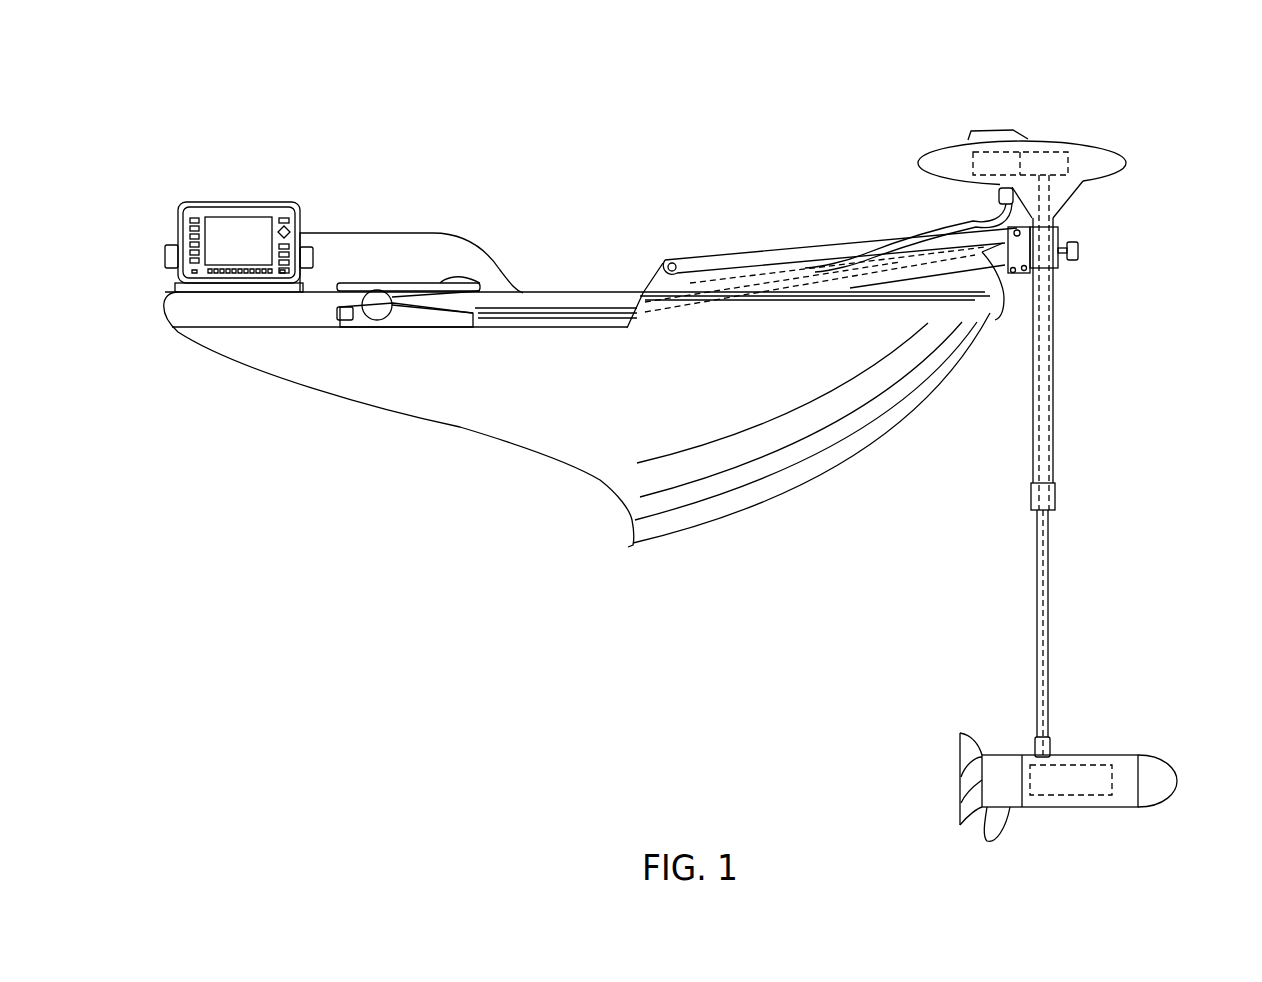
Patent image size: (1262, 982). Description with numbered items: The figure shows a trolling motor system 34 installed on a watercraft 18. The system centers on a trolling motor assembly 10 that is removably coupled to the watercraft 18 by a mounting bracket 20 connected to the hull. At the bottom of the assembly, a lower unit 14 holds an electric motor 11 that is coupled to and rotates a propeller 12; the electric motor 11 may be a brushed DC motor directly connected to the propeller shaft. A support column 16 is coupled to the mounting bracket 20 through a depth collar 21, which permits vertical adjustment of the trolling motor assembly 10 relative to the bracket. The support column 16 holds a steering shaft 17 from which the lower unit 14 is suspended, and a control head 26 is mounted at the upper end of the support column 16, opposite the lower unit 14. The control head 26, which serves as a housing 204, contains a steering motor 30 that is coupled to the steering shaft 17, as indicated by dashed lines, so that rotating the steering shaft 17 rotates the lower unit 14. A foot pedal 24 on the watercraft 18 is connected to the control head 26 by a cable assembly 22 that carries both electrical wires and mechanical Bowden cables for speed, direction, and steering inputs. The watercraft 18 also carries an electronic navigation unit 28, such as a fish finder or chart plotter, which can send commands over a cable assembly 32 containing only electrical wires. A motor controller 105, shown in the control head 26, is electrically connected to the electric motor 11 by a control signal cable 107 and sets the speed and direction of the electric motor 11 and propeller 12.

The trolling motor assembly 10 is at (1025, 454).
The electric motor 11 is at (1093, 762).
The propeller 12 is at (960, 733).
The lower unit 14 is at (1105, 749).
The support column 16 is at (1055, 413).
The steering shaft 17 is at (1075, 633).
The watercraft 18 is at (406, 413).
The mounting bracket 20 is at (896, 283).
The depth collar 21 is at (1065, 268).
The cable assembly 22 is at (1000, 212).
The foot pedal 24 is at (392, 282).
The control head 26 is at (1078, 198).
The electronic navigation unit 28 is at (279, 200).
The steering motor 30 is at (1047, 140).
The cable assembly 32 is at (421, 233).
The trolling motor system 34 is at (831, 214).
The motor controller 105 is at (988, 148).
The control signal cable 107 is at (1046, 640).
The housing 204 is at (1022, 143).